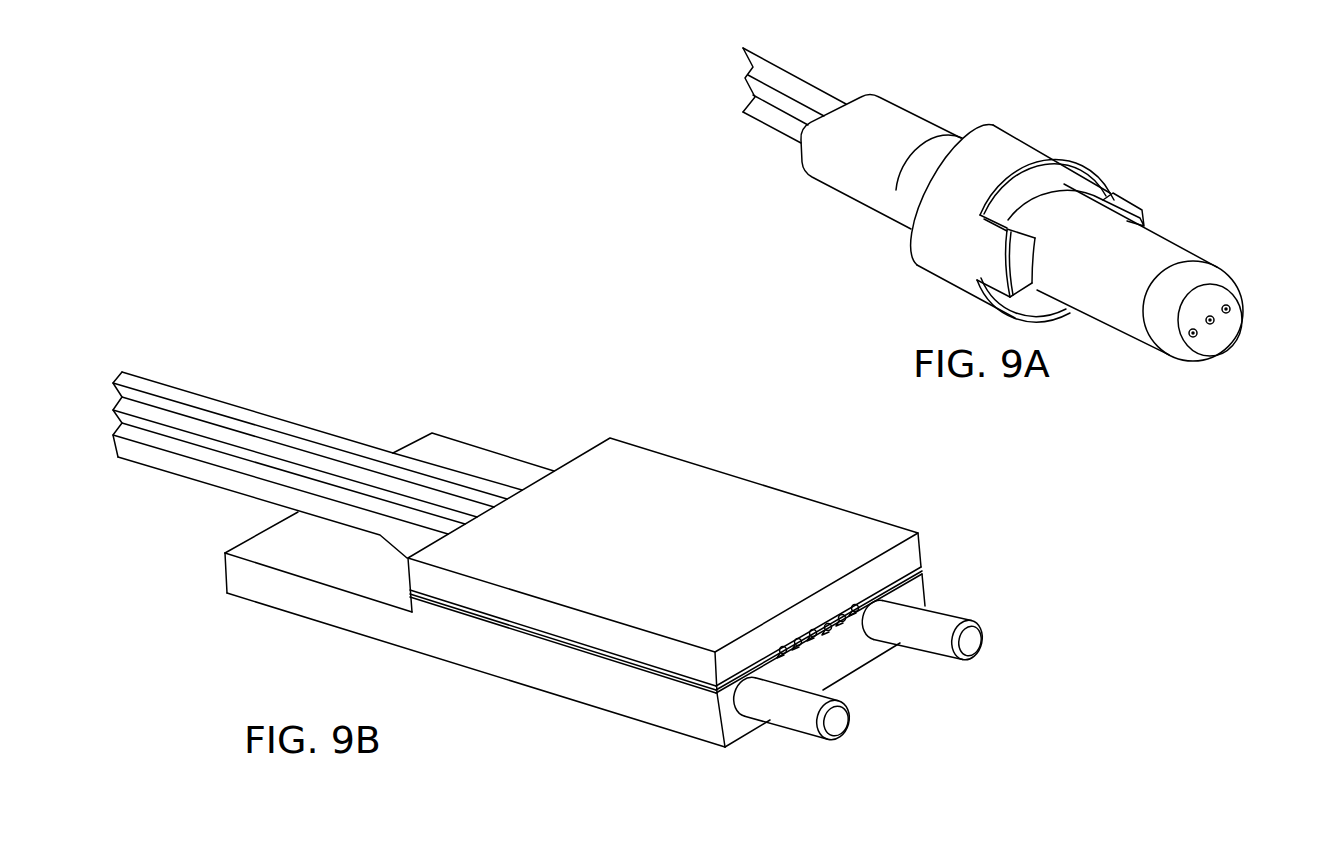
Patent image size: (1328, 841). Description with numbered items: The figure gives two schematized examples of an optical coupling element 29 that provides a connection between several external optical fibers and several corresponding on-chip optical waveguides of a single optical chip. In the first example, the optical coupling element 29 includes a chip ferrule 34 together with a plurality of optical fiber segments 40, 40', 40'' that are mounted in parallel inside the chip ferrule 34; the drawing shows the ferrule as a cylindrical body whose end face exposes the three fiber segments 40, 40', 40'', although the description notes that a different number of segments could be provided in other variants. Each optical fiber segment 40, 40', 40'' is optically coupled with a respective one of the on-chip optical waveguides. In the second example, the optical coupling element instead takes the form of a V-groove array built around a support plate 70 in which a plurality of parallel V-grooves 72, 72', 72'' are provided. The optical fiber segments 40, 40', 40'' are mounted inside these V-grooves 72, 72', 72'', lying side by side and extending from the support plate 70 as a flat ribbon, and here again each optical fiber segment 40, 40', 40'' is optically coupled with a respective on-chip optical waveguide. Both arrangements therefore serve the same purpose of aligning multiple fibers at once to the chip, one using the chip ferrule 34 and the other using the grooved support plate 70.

In FIG. 9A, the optical coupling element 29 is at (1091, 127).
In FIG. 9B, the optical coupling element 29 is at (740, 450).
In FIG. 9A, the chip ferrule 34 is at (1187, 252).
In FIG. 9A, the optical fiber segment 40 is at (1191, 373).
In FIG. 9B, the optical fiber segment 40 is at (302, 438).
In FIG. 9A, the optical fiber segment 40' is at (1246, 354).
In FIG. 9B, the optical fiber segment 40' is at (303, 461).
In FIG. 9A, the optical fiber segment 40'' is at (1272, 311).
In FIG. 9B, the optical fiber segment 40'' is at (289, 492).
In FIG. 9B, the support plate 70 is at (683, 712).
In FIG. 9B, the V-groove 72 is at (831, 705).
In FIG. 9B, the V-groove 72' is at (877, 704).
In FIG. 9B, the V-groove 72'' is at (903, 666).